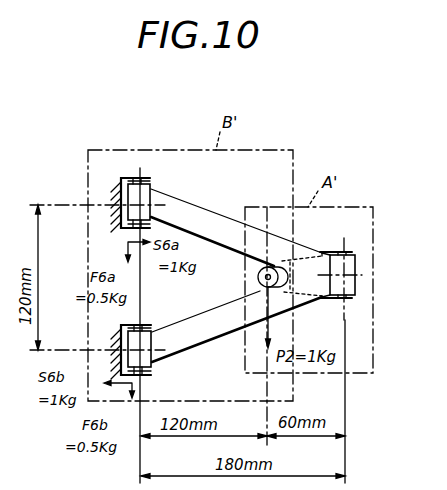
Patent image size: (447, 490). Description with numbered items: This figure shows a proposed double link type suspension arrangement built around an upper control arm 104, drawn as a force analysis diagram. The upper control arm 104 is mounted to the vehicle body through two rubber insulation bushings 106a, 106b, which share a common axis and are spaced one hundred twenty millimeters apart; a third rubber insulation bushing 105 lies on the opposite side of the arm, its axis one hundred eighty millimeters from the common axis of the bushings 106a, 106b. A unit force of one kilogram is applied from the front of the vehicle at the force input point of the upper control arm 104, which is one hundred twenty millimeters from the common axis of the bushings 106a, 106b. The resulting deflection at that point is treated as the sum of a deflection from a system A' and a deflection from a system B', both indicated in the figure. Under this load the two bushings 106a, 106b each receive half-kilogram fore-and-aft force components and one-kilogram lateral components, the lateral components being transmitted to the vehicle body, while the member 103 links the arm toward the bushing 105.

The link 103 is at (313, 256).
The upper control arm 104 is at (213, 213).
The rubber insulation bushing 105 is at (357, 258).
The rubber insulation bushing 106a is at (152, 184).
The rubber insulation bushing 106b is at (152, 330).